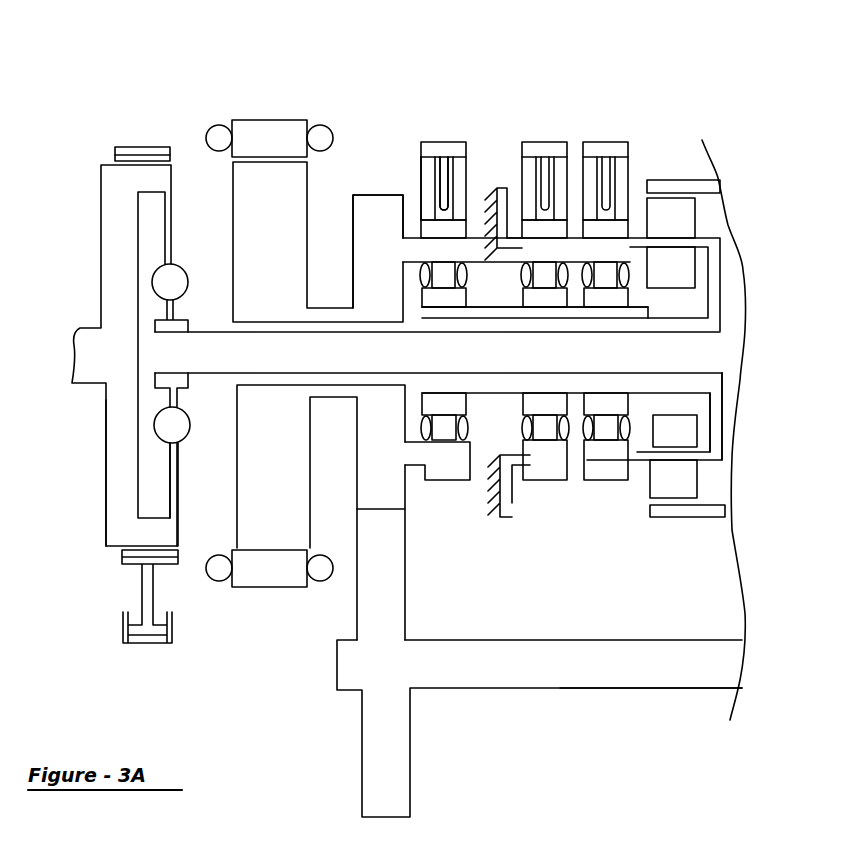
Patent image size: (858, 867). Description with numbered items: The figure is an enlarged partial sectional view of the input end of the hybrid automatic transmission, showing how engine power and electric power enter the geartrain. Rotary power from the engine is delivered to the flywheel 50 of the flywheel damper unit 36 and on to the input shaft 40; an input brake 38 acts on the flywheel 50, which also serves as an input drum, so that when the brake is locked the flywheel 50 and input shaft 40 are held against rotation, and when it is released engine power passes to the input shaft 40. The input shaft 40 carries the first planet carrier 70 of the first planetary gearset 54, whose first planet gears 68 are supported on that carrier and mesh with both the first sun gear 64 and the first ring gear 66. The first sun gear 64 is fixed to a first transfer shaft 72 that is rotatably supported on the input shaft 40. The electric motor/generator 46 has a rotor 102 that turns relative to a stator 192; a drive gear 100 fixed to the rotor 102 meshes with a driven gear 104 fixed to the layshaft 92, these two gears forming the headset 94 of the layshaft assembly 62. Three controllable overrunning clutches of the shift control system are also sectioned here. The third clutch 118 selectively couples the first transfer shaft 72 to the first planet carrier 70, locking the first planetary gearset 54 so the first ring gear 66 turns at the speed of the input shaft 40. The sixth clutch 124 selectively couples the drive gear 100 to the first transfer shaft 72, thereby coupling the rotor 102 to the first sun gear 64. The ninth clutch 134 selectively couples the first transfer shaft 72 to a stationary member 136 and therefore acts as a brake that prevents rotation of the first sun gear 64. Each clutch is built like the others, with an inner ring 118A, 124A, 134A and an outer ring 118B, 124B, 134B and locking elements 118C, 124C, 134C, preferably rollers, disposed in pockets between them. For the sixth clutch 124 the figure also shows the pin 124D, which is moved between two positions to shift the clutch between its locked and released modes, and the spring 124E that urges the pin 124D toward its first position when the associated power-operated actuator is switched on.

The flywheel damper unit 36 is at (97, 168).
The input brake 38 is at (140, 145).
The input shaft 40 is at (168, 238).
The electric motor/generator 46 is at (280, 118).
The flywheel 50 is at (102, 233).
The first planetary gearset 54 is at (660, 178).
The layshaft assembly 62 is at (493, 690).
The first sun gear 64 is at (700, 384).
The first ring gear 66 is at (682, 518).
The first planet gears 68 is at (685, 483).
The first planet carrier 70 is at (716, 392).
The first transfer shaft 72 is at (505, 320).
The layshaft 92 is at (668, 690).
The headset 94 is at (413, 533).
The drive gear 100 is at (375, 200).
The rotor 102 is at (286, 252).
The driven gear 104 is at (400, 612).
The third clutch 118 is at (627, 135).
The inner ring 118A is at (632, 403).
The outer ring 118B is at (613, 478).
The locking elements 118C is at (650, 425).
The sixth clutch 124 is at (424, 138).
The inner ring 124A is at (430, 298).
The outer ring 124B is at (443, 477).
The locking elements 124C is at (458, 278).
The pin 124D is at (447, 150).
The spring 124E is at (428, 165).
The ninth clutch 134 is at (557, 138).
The inner ring 134A is at (557, 403).
The outer ring 134B is at (552, 478).
The locking elements 134C is at (545, 431).
The stationary member 136 is at (510, 508).
The stator 192 is at (283, 600).